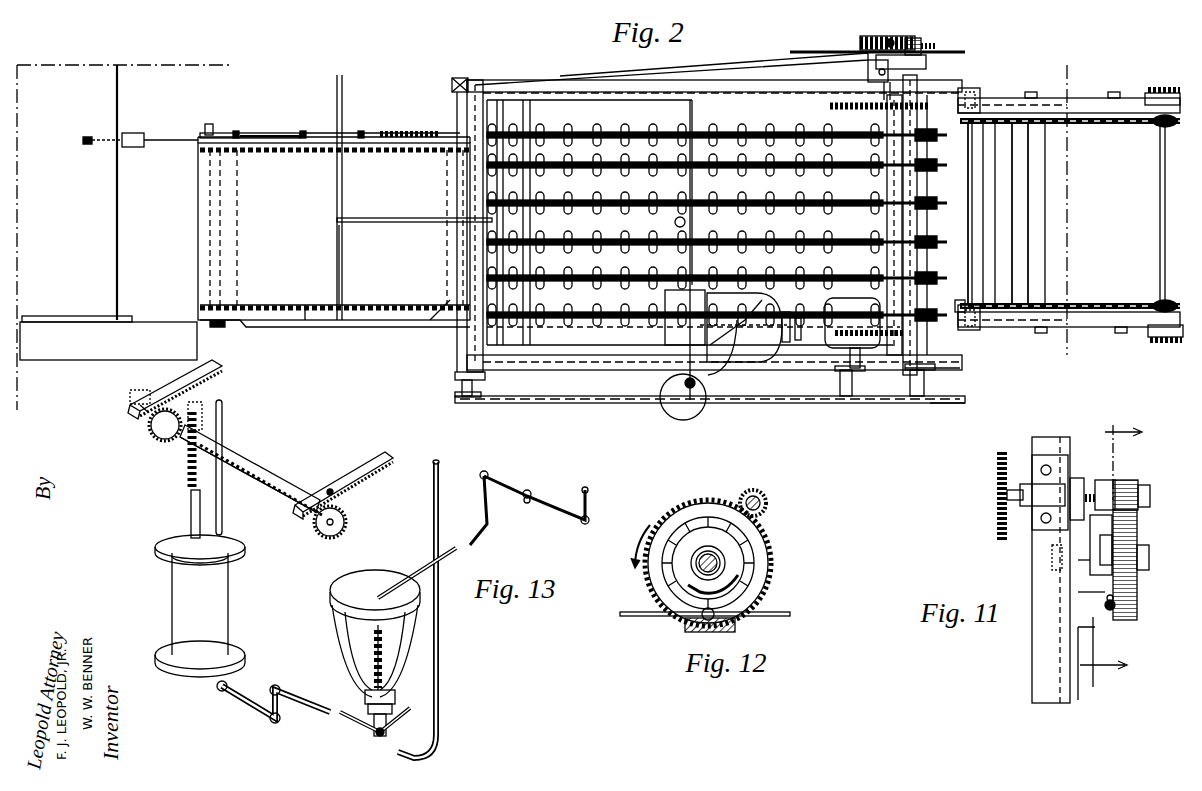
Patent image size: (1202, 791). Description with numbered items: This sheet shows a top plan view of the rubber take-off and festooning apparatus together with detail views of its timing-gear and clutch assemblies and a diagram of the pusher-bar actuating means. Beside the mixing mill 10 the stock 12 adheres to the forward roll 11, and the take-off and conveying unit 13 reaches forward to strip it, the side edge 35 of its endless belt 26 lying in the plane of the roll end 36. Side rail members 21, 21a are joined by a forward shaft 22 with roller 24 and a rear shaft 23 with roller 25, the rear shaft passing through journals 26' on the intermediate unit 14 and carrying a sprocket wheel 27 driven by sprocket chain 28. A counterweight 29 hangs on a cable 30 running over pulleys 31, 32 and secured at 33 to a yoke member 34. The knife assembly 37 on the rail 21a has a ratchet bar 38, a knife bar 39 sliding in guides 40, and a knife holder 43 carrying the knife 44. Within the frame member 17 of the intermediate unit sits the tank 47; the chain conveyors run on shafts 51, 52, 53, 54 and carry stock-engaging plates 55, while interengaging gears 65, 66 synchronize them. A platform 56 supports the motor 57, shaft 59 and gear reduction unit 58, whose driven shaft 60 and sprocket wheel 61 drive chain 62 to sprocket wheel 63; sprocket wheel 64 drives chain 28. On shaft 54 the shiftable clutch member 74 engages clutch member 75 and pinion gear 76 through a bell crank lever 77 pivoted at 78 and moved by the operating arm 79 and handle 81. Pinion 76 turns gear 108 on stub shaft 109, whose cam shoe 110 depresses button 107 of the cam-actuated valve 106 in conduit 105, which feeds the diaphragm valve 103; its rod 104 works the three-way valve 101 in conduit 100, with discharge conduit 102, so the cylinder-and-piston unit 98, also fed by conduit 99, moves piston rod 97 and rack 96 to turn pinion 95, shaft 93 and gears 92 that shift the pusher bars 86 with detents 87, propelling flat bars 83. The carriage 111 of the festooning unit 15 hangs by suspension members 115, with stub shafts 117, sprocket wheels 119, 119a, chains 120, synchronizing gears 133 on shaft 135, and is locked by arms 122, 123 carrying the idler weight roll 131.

In FIG. 2, the mixing mill 10 is at (66, 355).
In FIG. 2, the forward roll 11 is at (90, 240).
In FIG. 11, the rubber stock 12 is at (1111, 549).
In FIG. 2, the take-off and conveying unit 13 is at (334, 240).
In FIG. 2, the intermediate unit 14 is at (752, 372).
In FIG. 2, the movable carriage 15 is at (1084, 210).
In FIG. 2, the horizontal frame member 17 is at (598, 86).
In FIG. 2, the side rail member 21 is at (262, 322).
In FIG. 2, the side rail member 21a is at (236, 132).
In FIG. 2, the forward shaft 22 is at (212, 126).
In FIG. 2, the rear shaft 23 is at (466, 100).
In FIG. 2, the roller 24 is at (200, 205).
In FIG. 2, the roller 25 is at (446, 315).
In FIG. 2, the endless belt 26 is at (420, 251).
In FIG. 2, the journal 26' is at (441, 223).
In FIG. 2, the sprocket wheel 27 is at (462, 404).
In FIG. 2, the sprocket chain 28 is at (570, 404).
In FIG. 2, the counterweight 29 is at (675, 418).
In FIG. 2, the cable 30 is at (785, 345).
In FIG. 2, the pulley 31 is at (697, 382).
In FIG. 2, the pulley 32 is at (686, 223).
In FIG. 2, the cable attachment 33 is at (343, 220).
In FIG. 2, the yoke member 34 is at (343, 258).
In FIG. 2, the side edge of belt 35 is at (306, 325).
In FIG. 2, the end of forward roll 36 is at (100, 318).
In FIG. 2, the knife assembly 37 is at (339, 120).
In FIG. 2, the ratchet bar 38 is at (418, 131).
In FIG. 2, the knife bar 39 is at (308, 134).
In FIG. 2, the guide 40 is at (240, 134).
In FIG. 2, the knife holder 43 is at (130, 133).
In FIG. 2, the knife 44 is at (92, 138).
In FIG. 2, the tank 47 is at (570, 330).
In FIG. 2, the shaft 51 is at (526, 97).
In FIG. 2, the shaft 52 is at (500, 97).
In FIG. 2, the shaft 53 is at (835, 104).
In FIG. 2, the chain-drive shaft 54 is at (930, 143).
In FIG. 2, the stock-engaging plate 55 is at (565, 332).
In FIG. 2, the platform 56 is at (712, 380).
In FIG. 2, the motor 57 is at (726, 326).
In FIG. 2, the gear reduction unit 58 is at (845, 300).
In FIG. 2, the shaft 59 is at (790, 355).
In FIG. 2, the driven shaft 60 is at (858, 356).
In FIG. 2, the sprocket wheel 61 is at (843, 398).
In FIG. 2, the sprocket drive chain 62 is at (912, 398).
In FIG. 2, the sprocket wheel 63 is at (945, 372).
In FIG. 2, the sprocket wheel 64 is at (948, 402).
In FIG. 2, the gear 65 is at (822, 118).
In FIG. 2, the gear 66 is at (917, 100).
In FIG. 11, the gear 66 is at (1002, 455).
In FIG. 2, the axially shiftable clutch member 74 is at (926, 63).
In FIG. 11, the axially shiftable clutch member 74 is at (1077, 478).
In FIG. 2, the clutch member 75 is at (935, 47).
In FIG. 11, the clutch member 75 is at (1100, 480).
In FIG. 2, the pinion gear 76 is at (913, 38).
In FIG. 12, the pinion gear 76 is at (767, 503).
In FIG. 11, the pinion gear 76 is at (1130, 480).
In FIG. 2, the bell crank lever 77 is at (868, 68).
In FIG. 11, the bell crank lever 77 is at (1091, 545).
In FIG. 2, the pivot 78 is at (880, 76).
In FIG. 2, the operating arm 79 is at (700, 66).
In FIG. 2, the operating handle 81 is at (458, 78).
In FIG. 2, the flat bar 83 is at (1035, 232).
In FIG. 13, the flat bar 83 is at (240, 448).
In FIG. 13, the pusher bar 86 is at (218, 372).
In FIG. 13, the spring-pressed detent 87 is at (158, 405).
In FIG. 13, the gear 92 is at (153, 436).
In FIG. 13, the gear shaft 93 is at (268, 485).
In FIG. 13, the pinion gear 95 is at (185, 455).
In FIG. 13, the rack 96 is at (204, 422).
In FIG. 13, the piston rod 97 is at (190, 503).
In FIG. 13, the cylinder-and-piston unit 98 is at (200, 606).
In FIG. 13, the conduit 99 is at (224, 400).
In FIG. 13, the conduit 100 is at (262, 712).
In FIG. 13, the 3-way valve 101 is at (376, 735).
In FIG. 13, the discharge conduit 102 is at (395, 722).
In FIG. 13, the diaphragm valve 103 is at (355, 585).
In FIG. 13, the valve actuating rod 104 is at (372, 652).
In FIG. 2, the conduit 105 is at (824, 52).
In FIG. 13, the conduit 105 is at (478, 540).
In FIG. 12, the conduit 105 is at (624, 617).
In FIG. 11, the conduit 105 is at (1110, 612).
In FIG. 13, the cam-actuated valve 106 is at (527, 503).
In FIG. 12, the cam-actuated valve 106 is at (690, 630).
In FIG. 11, the cam-actuated valve 106 is at (1115, 598).
In FIG. 13, the operating button 107 is at (530, 493).
In FIG. 12, the operating button 107 is at (718, 612).
In FIG. 11, the operating button 107 is at (1100, 603).
In FIG. 2, the gear 108 is at (870, 38).
In FIG. 12, the gear 108 is at (686, 510).
In FIG. 11, the gear 108 is at (1138, 537).
In FIG. 2, the stub shaft 109 is at (890, 38).
In FIG. 12, the stub shaft 109 is at (720, 558).
In FIG. 11, the stub shaft 109 is at (1075, 562).
In FIG. 12, the cam shoe 110 is at (690, 588).
In FIG. 11, the cam shoe 110 is at (1100, 588).
In FIG. 2, the carriage 111 is at (1069, 212).
In FIG. 2, the vertical suspension member 115 is at (1031, 92).
In FIG. 2, the stub shaft 117 is at (1000, 92).
In FIG. 2, the sprocket wheel 119 is at (985, 110).
In FIG. 2, the sprocket wheel 119a is at (1166, 128).
In FIG. 2, the sprocket chain 120 is at (1098, 128).
In FIG. 2, the arm 122 is at (958, 312).
In FIG. 2, the arm 123 is at (985, 92).
In FIG. 2, the idler weight roll 131 is at (968, 232).
In FIG. 2, the gear 133 is at (1172, 348).
In FIG. 2, the shaft 135 is at (1166, 200).